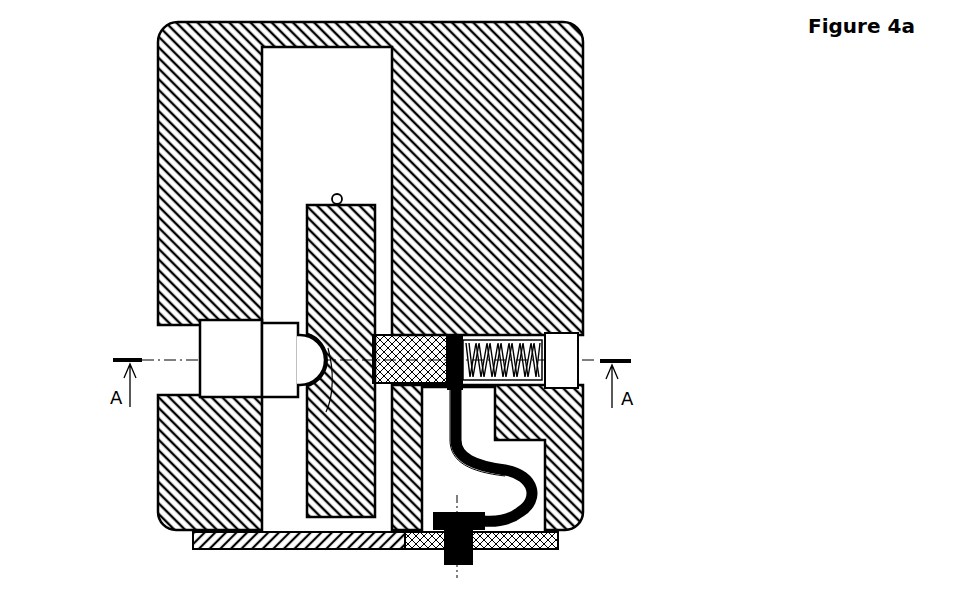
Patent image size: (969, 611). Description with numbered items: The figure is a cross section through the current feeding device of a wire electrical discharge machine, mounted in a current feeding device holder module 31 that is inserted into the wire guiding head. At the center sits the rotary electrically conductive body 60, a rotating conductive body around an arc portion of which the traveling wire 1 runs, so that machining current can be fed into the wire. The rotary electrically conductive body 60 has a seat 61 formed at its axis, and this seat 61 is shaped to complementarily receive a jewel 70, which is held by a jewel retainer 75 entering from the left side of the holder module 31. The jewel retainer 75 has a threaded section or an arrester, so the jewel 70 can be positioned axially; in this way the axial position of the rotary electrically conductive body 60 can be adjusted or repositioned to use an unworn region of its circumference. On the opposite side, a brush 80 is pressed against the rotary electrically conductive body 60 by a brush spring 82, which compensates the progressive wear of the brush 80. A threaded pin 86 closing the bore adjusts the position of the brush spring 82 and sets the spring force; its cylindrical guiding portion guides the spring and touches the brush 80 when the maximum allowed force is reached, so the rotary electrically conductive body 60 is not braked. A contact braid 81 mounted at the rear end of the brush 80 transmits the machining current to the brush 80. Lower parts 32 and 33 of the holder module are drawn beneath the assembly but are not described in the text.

The traveling wire 1 is at (337, 194).
The rotary electrically conductive body 60 is at (358, 228).
The seat 61 is at (318, 428).
The jewel 70 is at (300, 336).
The jewel retainer 75 is at (280, 345).
The brush 80 is at (417, 338).
The brush spring 82 is at (480, 338).
The threaded pin 86 is at (562, 345).
The current feeding device holder module 31 is at (560, 427).
The contact braid 81 is at (545, 503).
The base plate hatched part 32 is at (193, 535).
The base plate cross-hatched part 33 is at (557, 548).